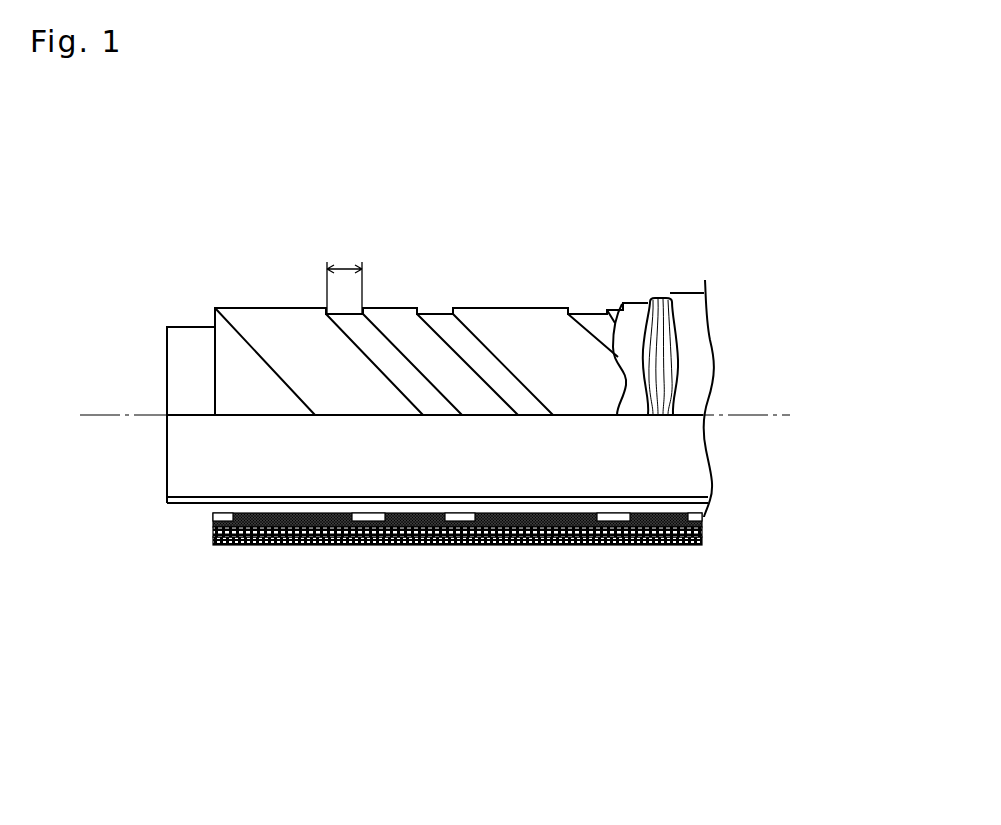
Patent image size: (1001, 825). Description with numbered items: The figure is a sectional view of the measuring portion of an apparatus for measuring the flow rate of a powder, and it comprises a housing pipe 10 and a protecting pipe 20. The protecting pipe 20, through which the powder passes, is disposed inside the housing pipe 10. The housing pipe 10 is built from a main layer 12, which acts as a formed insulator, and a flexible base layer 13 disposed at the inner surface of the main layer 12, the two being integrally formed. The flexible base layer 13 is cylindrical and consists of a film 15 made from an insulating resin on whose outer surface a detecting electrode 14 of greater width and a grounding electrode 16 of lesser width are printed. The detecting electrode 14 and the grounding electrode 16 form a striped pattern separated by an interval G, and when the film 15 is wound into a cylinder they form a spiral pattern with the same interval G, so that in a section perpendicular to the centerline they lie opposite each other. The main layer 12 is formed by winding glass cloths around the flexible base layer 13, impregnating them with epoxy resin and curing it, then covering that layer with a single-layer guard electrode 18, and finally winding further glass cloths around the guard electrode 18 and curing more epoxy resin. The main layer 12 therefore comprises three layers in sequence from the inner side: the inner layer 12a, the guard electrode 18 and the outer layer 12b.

The housing pipe 10 is at (688, 153).
The main layer 12 is at (572, 200).
The inner layer of main layer 12a is at (637, 310).
The outer layer of main layer 12b is at (688, 310).
The flexible base layer 13 is at (523, 200).
The detecting electrode 14 is at (280, 320).
The film 15 is at (443, 323).
The grounding electrode 16 is at (392, 322).
The guard electrode 18 is at (662, 300).
The protecting pipe 20 is at (182, 503).
The interval G is at (344, 274).